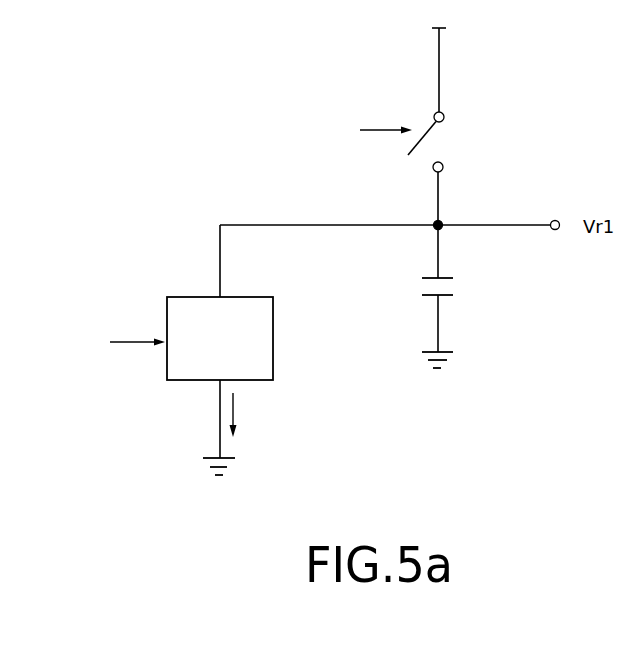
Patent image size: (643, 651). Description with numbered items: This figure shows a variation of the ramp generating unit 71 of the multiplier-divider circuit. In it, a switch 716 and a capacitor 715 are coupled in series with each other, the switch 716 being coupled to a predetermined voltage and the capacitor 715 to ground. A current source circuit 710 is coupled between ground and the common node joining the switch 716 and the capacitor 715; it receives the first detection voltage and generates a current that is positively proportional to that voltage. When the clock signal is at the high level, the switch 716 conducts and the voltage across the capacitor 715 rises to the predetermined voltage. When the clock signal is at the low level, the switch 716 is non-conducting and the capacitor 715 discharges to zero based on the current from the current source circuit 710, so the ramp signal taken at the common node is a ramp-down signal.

The ramp generating unit 71 is at (524, 106).
The current source circuit 710 is at (167, 312).
The capacitor 715 is at (442, 296).
The switch 716 is at (443, 140).